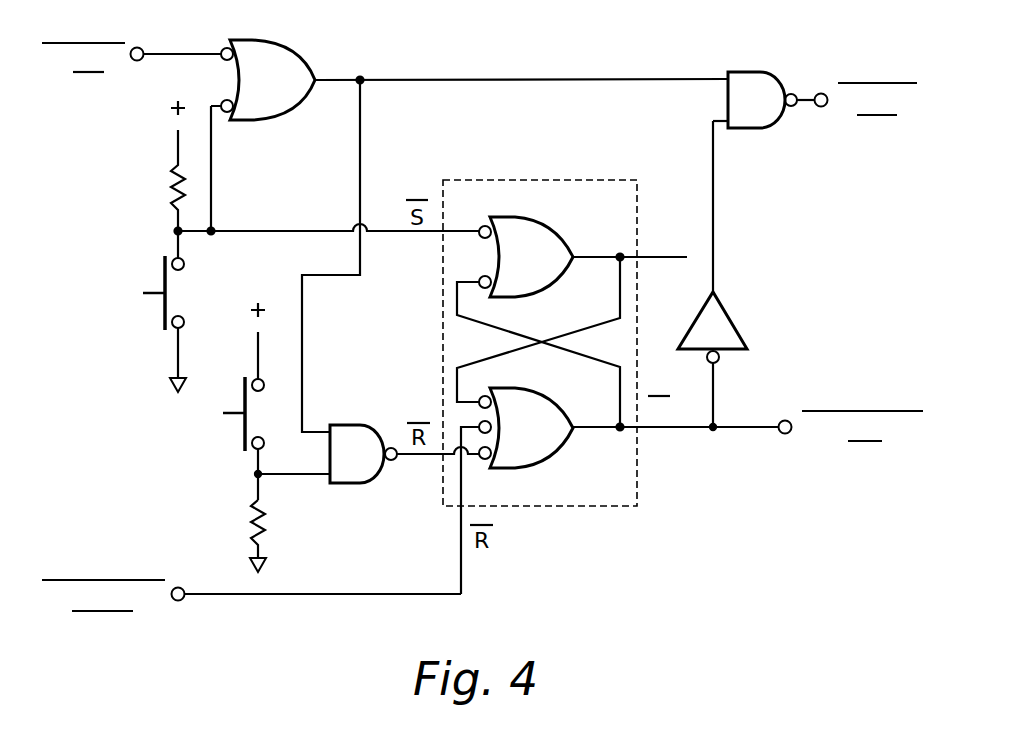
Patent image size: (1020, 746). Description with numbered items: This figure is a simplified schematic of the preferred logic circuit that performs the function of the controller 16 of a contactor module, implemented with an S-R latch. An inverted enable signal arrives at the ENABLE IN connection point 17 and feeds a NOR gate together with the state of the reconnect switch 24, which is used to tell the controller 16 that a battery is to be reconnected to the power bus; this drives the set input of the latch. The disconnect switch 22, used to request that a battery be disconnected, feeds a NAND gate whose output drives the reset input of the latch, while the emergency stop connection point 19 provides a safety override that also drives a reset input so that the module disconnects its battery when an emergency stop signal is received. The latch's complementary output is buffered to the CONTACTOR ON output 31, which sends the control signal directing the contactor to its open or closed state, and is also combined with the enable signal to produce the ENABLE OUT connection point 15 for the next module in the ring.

The ENABLE IN connection point 17 is at (140, 47).
The ENABLE OUT connection point 15 is at (829, 107).
The controller 16 is at (602, 556).
The reconnect switch 24 is at (157, 333).
The disconnect switch 22 is at (238, 460).
The emergency stop connection point 19 is at (182, 600).
The CONTACTOR ON output 31 is at (784, 435).